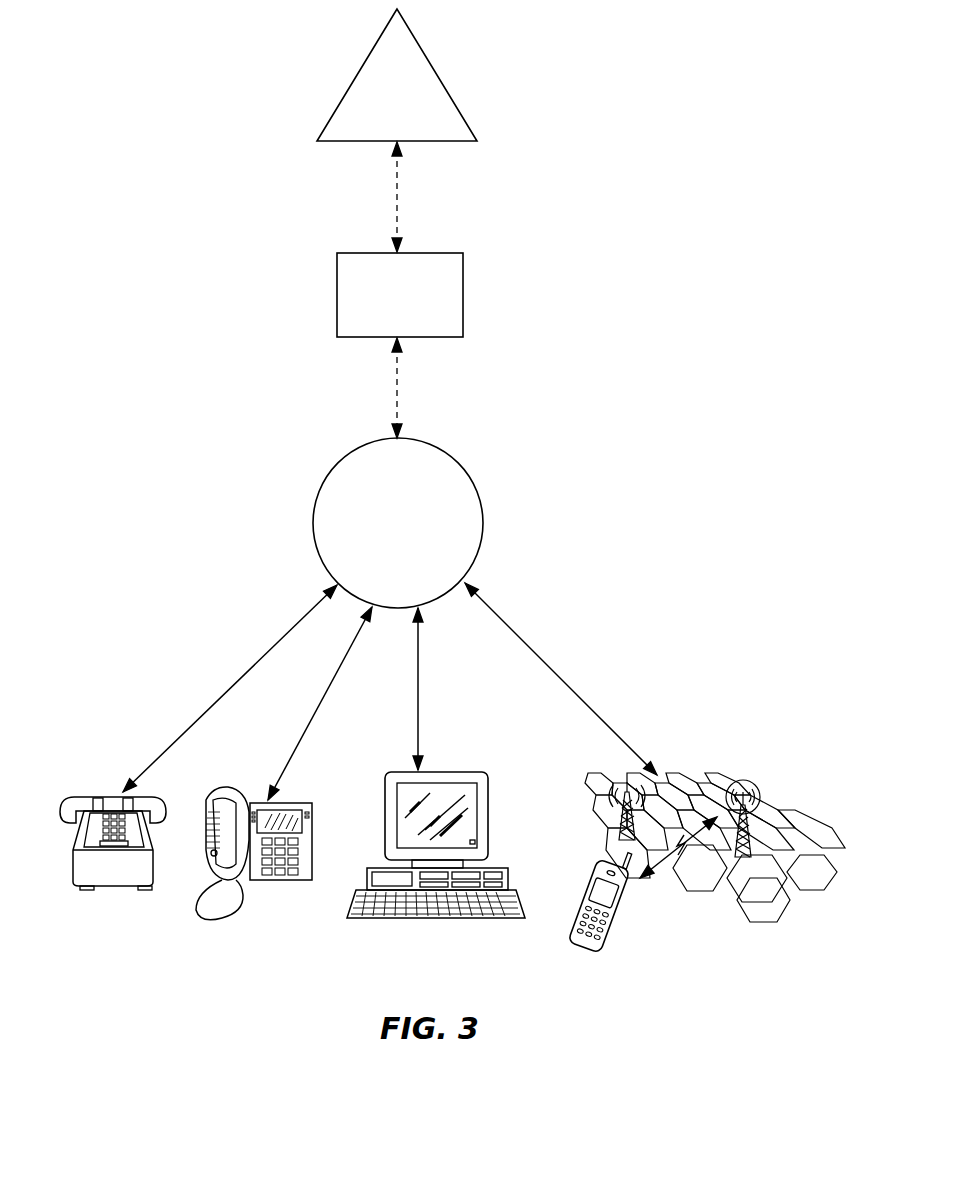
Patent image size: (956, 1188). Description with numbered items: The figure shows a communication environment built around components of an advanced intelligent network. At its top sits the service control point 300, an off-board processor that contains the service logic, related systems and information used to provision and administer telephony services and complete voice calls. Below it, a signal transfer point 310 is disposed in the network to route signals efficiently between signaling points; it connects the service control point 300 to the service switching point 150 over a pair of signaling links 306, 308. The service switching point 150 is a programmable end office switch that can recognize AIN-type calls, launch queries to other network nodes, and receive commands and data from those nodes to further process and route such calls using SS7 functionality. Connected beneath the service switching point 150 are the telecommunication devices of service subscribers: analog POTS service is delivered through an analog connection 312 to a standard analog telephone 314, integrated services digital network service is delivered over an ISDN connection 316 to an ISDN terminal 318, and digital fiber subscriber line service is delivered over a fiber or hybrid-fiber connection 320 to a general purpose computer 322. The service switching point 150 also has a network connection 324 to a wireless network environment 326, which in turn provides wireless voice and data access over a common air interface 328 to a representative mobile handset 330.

The service control point (SCP) 300 is at (418, 126).
The signaling link 306 is at (394, 188).
The signal transfer point (STP) 310 is at (380, 323).
The signaling link 308 is at (396, 400).
The service switching point (SSP) 150 is at (378, 551).
The analog connection 312 is at (238, 681).
The standard analog telephone 314 is at (105, 886).
The ISDN connection 316 is at (305, 732).
The ISDN terminal 318 is at (258, 882).
The fiber connection 320 is at (419, 706).
The general purpose computer 322 is at (455, 772).
The network connection 324 is at (574, 692).
The wireless network environment 326 is at (782, 824).
The common air interface 328 is at (672, 846).
The mobile handset 330 is at (606, 938).